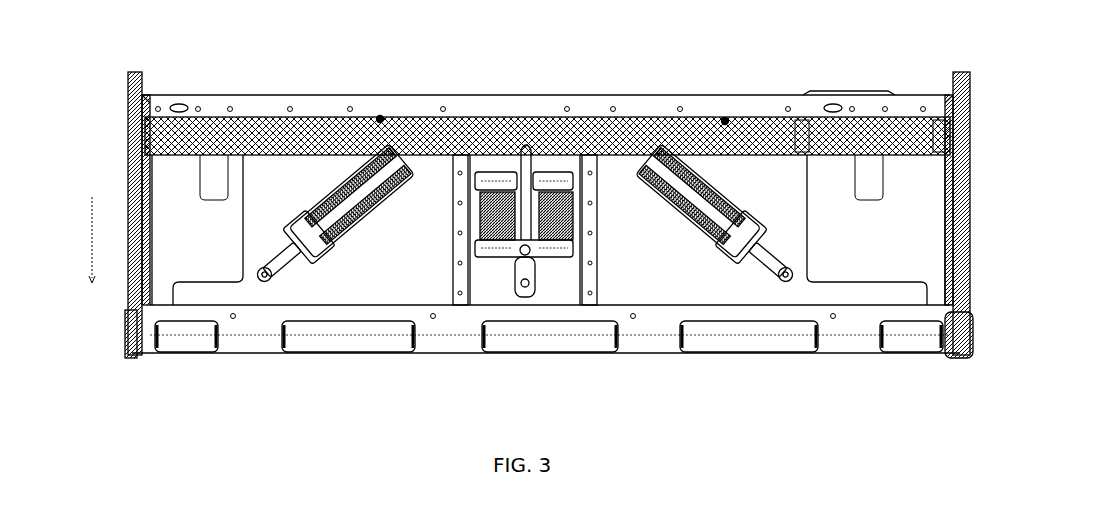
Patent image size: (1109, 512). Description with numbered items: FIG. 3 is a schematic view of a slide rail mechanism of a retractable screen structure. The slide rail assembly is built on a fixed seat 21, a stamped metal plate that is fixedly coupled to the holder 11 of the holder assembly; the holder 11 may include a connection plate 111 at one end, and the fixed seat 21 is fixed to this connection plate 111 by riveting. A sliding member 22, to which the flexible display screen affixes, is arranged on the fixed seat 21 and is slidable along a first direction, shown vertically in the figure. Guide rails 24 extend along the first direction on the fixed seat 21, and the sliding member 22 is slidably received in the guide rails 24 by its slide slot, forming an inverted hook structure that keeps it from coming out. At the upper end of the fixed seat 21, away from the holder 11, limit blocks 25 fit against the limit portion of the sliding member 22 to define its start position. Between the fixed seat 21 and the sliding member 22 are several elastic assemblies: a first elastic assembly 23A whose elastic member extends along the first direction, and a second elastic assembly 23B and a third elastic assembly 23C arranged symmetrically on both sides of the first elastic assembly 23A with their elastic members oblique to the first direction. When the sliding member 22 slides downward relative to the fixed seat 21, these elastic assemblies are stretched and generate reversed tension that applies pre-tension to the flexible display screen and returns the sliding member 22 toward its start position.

The holder 11 is at (132, 178).
The connection plate 111 is at (525, 103).
The fixed seat 21 is at (385, 283).
The sliding member 22 is at (318, 133).
The first elastic assembly 23A is at (562, 222).
The second elastic assembly 23B is at (332, 225).
The third elastic assembly 23C is at (732, 230).
The guide rail 24 is at (458, 178).
The limit block 25 is at (380, 117).